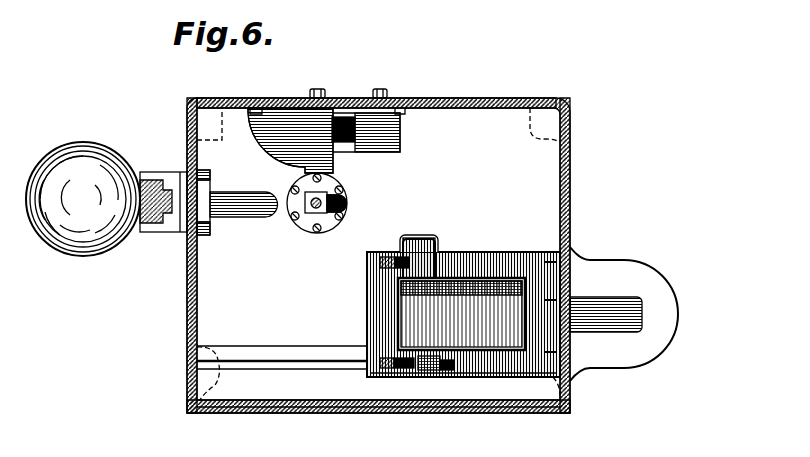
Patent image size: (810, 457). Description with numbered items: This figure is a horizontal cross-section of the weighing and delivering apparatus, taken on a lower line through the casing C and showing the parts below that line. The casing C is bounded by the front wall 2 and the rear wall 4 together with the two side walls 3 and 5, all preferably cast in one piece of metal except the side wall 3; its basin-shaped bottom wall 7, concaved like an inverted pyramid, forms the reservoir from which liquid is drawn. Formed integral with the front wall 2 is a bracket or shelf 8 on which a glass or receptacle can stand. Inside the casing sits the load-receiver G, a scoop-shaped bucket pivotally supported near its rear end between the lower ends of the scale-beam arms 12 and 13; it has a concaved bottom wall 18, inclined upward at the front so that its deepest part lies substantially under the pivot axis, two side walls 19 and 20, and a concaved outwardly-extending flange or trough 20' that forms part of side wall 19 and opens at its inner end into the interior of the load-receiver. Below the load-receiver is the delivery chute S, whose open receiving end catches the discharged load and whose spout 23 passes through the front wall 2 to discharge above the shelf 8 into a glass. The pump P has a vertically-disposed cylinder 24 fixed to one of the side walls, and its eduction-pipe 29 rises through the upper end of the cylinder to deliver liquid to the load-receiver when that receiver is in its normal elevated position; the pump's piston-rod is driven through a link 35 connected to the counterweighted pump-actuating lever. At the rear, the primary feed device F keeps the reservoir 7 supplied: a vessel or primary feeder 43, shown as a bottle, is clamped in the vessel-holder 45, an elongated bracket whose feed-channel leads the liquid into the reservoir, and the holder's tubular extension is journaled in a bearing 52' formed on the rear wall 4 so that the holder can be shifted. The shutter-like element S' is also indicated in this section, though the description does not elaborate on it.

The casing C is at (389, 255).
The front wall 2 is at (572, 184).
The side wall 3 is at (370, 410).
The rear wall 4 is at (187, 288).
The side wall 5 is at (429, 98).
The basin-shaped bottom wall 7 is at (282, 332).
The bracket or shelf 8 is at (654, 276).
The scale-beam arm 12 is at (382, 364).
The scale-beam arm 13 is at (380, 263).
The concaved bottom wall 18 is at (428, 308).
The side wall 19 is at (500, 350).
The side wall 20 is at (463, 304).
The flange or trough 20' is at (421, 242).
The spout 23 is at (611, 297).
The cylinder 24 is at (293, 214).
The eduction-pipe 29 is at (343, 197).
The link 35 is at (313, 213).
The vessel or primary feeder 43 is at (52, 246).
The vessel-holder 45 is at (152, 180).
The bearing 52' is at (162, 214).
The primary feed device F is at (83, 199).
The load-receiver G is at (461, 314).
The pump P is at (347, 200).
The delivery chute S is at (463, 302).
The shutter S' is at (324, 122).